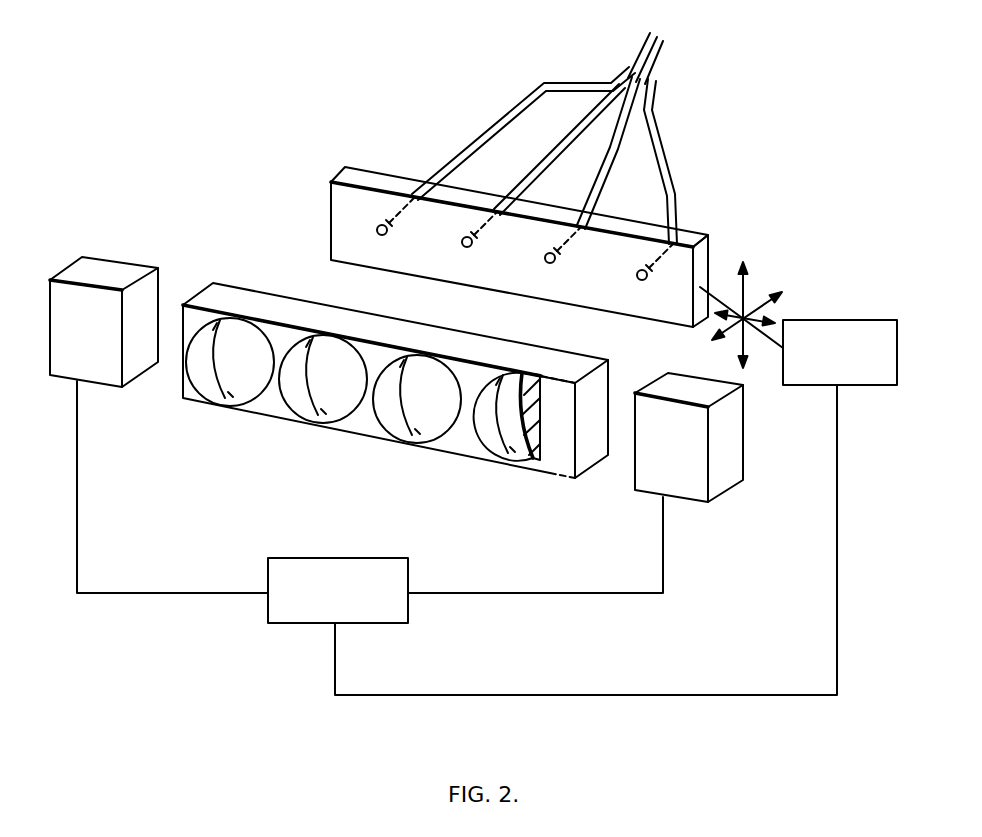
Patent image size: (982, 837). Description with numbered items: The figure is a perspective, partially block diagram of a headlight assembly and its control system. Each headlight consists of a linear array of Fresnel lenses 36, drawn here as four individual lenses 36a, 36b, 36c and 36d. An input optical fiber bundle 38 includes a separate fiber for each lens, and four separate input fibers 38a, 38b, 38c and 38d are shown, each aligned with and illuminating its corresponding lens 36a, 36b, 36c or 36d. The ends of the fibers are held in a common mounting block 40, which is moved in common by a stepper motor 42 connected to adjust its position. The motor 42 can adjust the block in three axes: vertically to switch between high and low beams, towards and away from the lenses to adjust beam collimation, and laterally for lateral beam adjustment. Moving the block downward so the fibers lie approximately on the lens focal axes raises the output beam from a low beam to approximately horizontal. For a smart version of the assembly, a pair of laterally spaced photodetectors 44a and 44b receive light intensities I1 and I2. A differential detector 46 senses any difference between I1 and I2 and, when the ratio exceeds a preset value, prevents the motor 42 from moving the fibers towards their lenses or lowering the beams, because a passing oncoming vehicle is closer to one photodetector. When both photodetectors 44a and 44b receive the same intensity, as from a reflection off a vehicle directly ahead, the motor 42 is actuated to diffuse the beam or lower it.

The linear array of Fresnel lenses 36 is at (241, 433).
The first Fresnel lens 36a is at (200, 403).
The second Fresnel lens 36b is at (343, 422).
The third Fresnel lens 36c is at (433, 443).
The fourth Fresnel lens 36d is at (530, 467).
The input optical fiber bundle 38 is at (618, 38).
The first input optical fiber 38a is at (477, 142).
The second input optical fiber 38b is at (524, 176).
The third input optical fiber 38c is at (594, 196).
The fourth input optical fiber 38d is at (674, 200).
The common mounting block 40 is at (331, 205).
The stepper motor 42 is at (867, 318).
The first photodetector 44a is at (90, 273).
The second photodetector 44b is at (730, 452).
The differential detector 46 is at (290, 624).
The optical intensity at first photodetector I1 is at (79, 346).
The optical intensity at second photodetector I2 is at (664, 455).